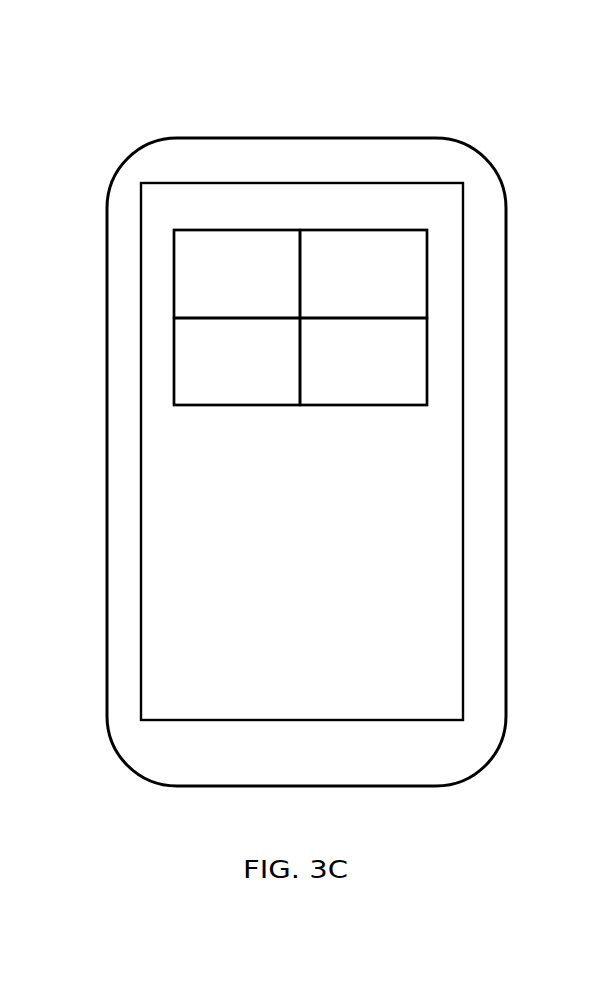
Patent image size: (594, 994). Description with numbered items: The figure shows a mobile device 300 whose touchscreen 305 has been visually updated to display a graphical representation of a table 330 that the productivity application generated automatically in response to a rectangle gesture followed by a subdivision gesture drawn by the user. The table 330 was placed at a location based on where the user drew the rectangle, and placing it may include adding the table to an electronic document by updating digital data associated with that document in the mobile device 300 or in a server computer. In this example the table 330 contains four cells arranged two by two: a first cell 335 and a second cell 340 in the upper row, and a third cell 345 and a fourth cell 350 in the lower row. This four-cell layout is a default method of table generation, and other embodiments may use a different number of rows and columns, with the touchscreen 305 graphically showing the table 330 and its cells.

The mobile device 300 is at (203, 123).
The touchscreen 305 is at (323, 713).
The table 330 is at (442, 325).
The first cell 335 is at (257, 298).
The second cell 340 is at (383, 298).
The third cell 345 is at (257, 386).
The fourth cell 350 is at (383, 386).